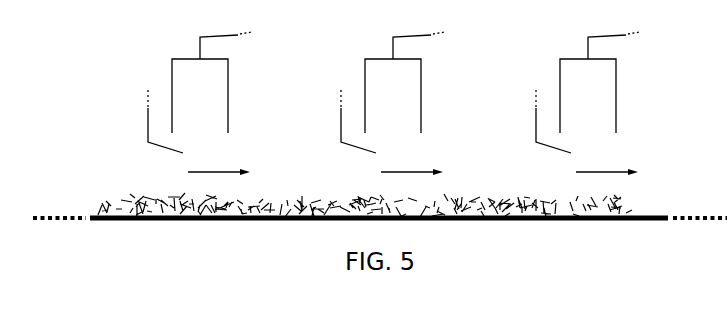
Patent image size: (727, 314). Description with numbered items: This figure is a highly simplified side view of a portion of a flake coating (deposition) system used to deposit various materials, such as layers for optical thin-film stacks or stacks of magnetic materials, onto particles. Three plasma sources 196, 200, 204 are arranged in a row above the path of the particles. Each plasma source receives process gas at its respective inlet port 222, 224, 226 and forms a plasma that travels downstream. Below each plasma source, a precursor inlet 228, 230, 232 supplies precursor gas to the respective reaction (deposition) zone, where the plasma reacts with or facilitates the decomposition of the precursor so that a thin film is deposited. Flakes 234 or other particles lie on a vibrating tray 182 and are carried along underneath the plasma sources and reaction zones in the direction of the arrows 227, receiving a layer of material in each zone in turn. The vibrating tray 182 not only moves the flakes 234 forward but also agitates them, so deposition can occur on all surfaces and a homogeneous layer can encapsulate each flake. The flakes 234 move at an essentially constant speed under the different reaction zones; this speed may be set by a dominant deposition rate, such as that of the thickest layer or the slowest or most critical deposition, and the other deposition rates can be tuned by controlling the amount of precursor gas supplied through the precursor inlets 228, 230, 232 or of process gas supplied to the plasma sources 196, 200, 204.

The vibrating tray 182 is at (519, 221).
The plasma source 196 is at (214, 58).
The plasma source 200 is at (407, 58).
The plasma source 204 is at (602, 58).
The inlet port 222 is at (198, 52).
The inlet port 224 is at (391, 52).
The inlet port 226 is at (586, 52).
The arrows 227 is at (212, 172).
The precursor inlet 228 is at (153, 149).
The precursor inlet 230 is at (346, 149).
The precursor inlet 232 is at (541, 149).
The flakes 234 is at (308, 197).